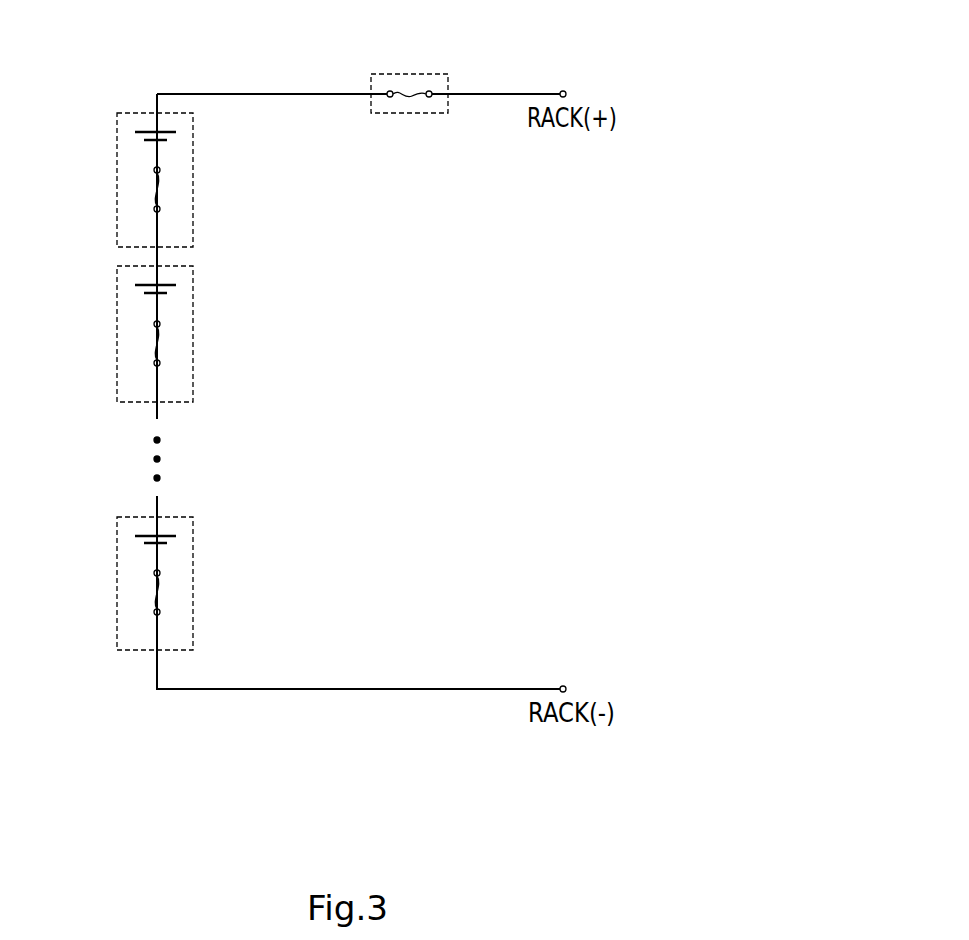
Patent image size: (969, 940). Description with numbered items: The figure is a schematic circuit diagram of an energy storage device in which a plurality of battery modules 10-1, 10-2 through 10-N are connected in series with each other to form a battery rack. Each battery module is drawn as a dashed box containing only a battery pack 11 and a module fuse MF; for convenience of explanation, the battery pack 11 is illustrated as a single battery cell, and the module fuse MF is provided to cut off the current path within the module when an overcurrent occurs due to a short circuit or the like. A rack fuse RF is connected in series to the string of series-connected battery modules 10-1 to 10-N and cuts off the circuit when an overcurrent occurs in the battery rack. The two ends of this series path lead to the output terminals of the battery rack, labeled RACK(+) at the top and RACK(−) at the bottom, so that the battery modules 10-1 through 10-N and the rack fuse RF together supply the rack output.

The battery module 10-1 is at (109, 180).
The battery module 10-2 is at (117, 333).
The battery module 10-N is at (117, 583).
The battery pack 11 is at (138, 139).
The module fuse MF is at (171, 189).
The rack fuse RF is at (408, 74).